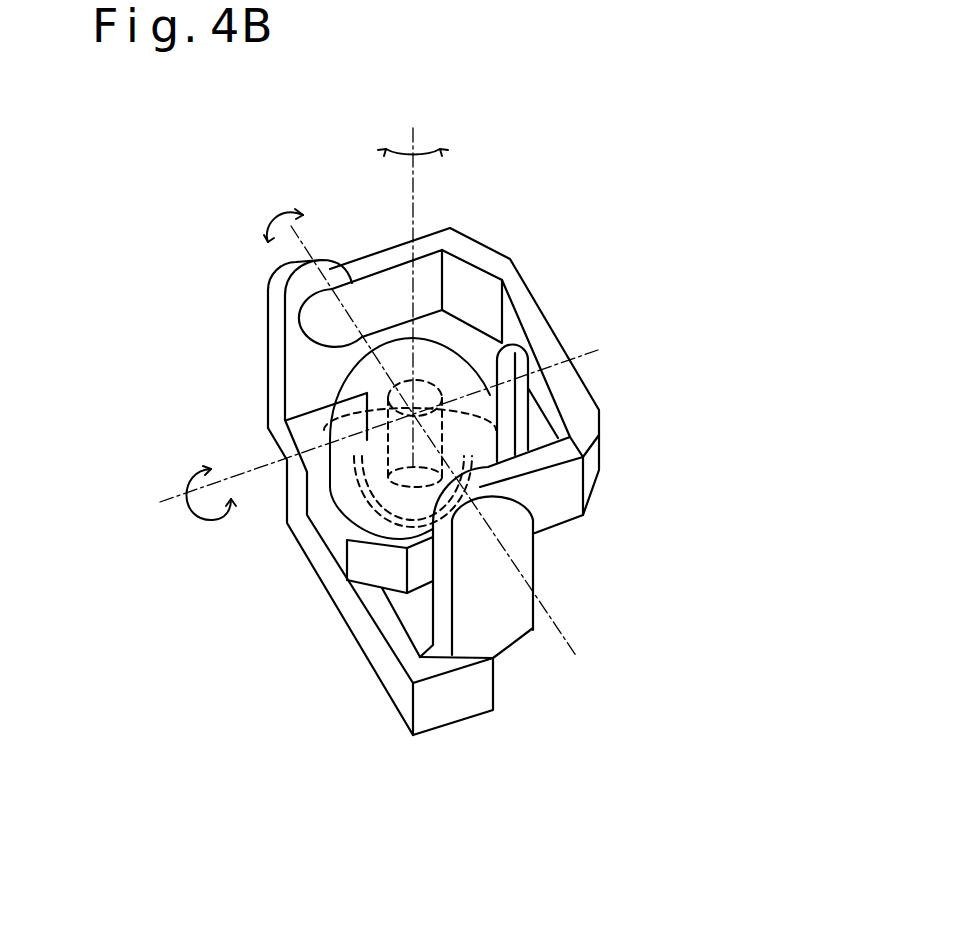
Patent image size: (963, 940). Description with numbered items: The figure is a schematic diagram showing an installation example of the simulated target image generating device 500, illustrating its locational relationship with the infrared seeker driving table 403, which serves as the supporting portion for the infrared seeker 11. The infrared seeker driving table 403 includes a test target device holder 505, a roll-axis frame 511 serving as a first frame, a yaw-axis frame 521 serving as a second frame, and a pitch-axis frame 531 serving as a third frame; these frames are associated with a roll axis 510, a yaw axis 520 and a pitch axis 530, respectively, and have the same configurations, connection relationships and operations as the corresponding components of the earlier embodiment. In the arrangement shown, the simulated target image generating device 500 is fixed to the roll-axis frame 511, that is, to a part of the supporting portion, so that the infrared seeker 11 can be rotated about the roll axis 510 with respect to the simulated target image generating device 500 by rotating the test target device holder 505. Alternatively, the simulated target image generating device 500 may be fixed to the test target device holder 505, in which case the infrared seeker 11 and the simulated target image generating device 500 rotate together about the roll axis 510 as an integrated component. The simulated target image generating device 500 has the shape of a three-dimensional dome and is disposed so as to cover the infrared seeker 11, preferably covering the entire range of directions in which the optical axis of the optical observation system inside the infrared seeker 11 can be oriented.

The roll axis 510 is at (415, 282).
The pitch axis 530 is at (391, 418).
The yaw axis 520 is at (328, 435).
The yaw-axis frame 521 is at (491, 255).
The simulated target image generating device 500 is at (366, 352).
The infrared seeker 11 is at (388, 416).
The test target device holder 505 is at (383, 490).
The roll-axis frame 511 is at (344, 558).
The pitch-axis frame 531 is at (488, 692).
The infrared seeker driving table 403 is at (339, 744).